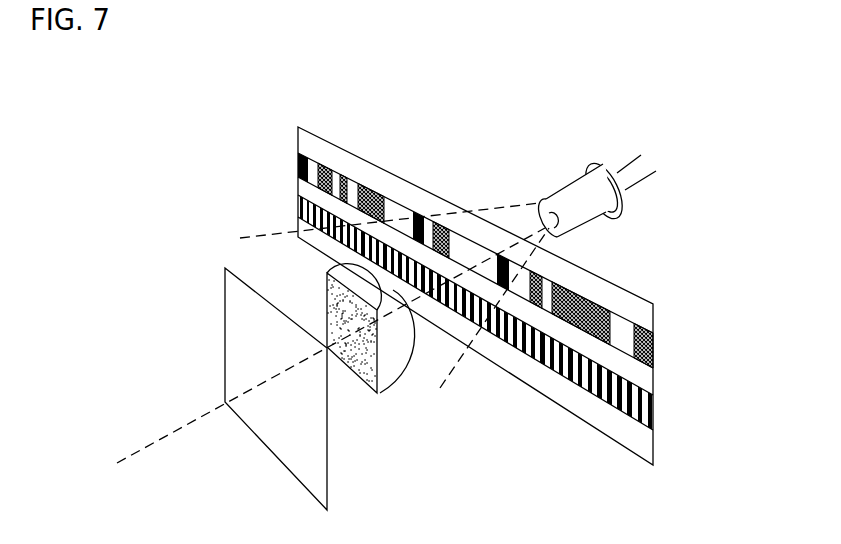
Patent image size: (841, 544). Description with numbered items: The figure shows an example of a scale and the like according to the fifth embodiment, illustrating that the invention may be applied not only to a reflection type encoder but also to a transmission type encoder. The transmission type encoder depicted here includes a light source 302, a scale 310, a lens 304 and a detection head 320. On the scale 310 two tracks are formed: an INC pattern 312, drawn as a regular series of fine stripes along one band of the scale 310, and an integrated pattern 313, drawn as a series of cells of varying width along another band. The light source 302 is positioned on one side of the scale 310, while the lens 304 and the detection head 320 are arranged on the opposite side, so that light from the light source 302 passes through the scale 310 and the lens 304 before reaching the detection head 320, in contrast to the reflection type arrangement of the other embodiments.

The light source 302 is at (576, 182).
The lens 304 is at (387, 372).
The scale 310 is at (513, 296).
The INC pattern 312 is at (657, 418).
The integrated pattern 313 is at (655, 354).
The detection head 320 is at (322, 460).